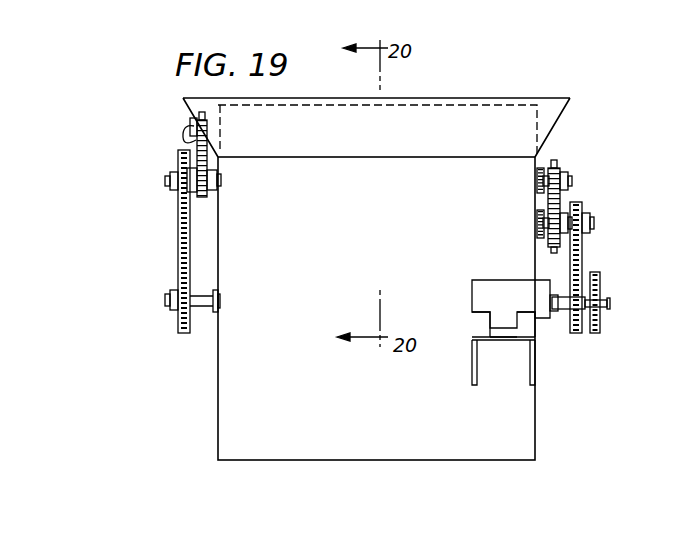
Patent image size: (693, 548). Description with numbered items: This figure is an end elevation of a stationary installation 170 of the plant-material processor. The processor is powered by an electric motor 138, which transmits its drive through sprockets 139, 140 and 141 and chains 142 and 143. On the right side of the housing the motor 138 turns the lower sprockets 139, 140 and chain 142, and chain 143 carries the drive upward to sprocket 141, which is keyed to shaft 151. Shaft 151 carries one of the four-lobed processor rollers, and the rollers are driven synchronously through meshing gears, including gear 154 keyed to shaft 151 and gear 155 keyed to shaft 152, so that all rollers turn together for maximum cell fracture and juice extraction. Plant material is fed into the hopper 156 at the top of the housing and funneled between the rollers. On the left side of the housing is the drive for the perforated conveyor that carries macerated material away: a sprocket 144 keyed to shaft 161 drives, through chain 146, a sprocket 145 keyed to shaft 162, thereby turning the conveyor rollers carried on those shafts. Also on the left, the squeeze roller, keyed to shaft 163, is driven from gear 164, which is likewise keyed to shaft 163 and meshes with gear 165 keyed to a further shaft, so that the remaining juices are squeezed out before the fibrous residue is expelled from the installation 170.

The electric motor 138 is at (478, 296).
The sprocket 139 is at (595, 333).
The sprocket 140 is at (575, 333).
The sprocket 141 is at (578, 202).
The chain 142 is at (600, 320).
The chain 143 is at (582, 260).
The sprocket 144 is at (183, 333).
The sprocket 145 is at (200, 205).
The chain 146 is at (190, 245).
The shaft 151 is at (594, 222).
The shaft 152 is at (572, 180).
The gear 154 is at (552, 247).
The gear 155 is at (560, 160).
The hopper 156 is at (552, 100).
The shaft 161 is at (172, 292).
The shaft 162 is at (190, 207).
The shaft 163 is at (196, 146).
The gear 164 is at (223, 110).
The gear 165 is at (210, 200).
The stationary installation 170 is at (212, 417).